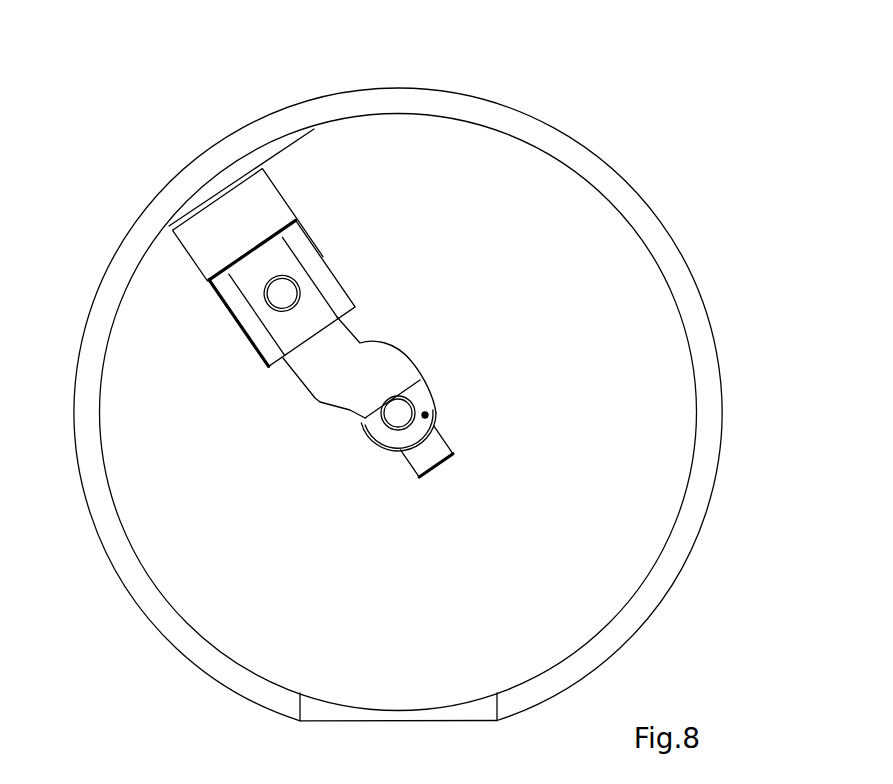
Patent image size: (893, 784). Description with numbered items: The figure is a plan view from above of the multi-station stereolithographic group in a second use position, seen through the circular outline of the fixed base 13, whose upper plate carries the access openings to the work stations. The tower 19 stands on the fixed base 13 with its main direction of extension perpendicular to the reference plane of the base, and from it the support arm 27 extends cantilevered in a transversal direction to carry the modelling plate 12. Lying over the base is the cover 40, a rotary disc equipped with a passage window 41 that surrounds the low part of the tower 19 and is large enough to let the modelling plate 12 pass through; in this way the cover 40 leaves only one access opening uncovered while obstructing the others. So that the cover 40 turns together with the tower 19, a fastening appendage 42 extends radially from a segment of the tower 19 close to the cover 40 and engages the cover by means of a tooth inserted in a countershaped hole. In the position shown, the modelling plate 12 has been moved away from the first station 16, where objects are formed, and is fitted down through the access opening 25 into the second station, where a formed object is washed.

The modelling plate 12 is at (322, 257).
The fixed base 13 is at (722, 403).
The first station 16 is at (241, 143).
The tower 19 is at (427, 415).
The access opening 25 is at (198, 263).
The support arm 27 is at (320, 363).
The cover 40 is at (640, 340).
The passage window 41 is at (184, 250).
The fastening appendage 42 is at (430, 457).